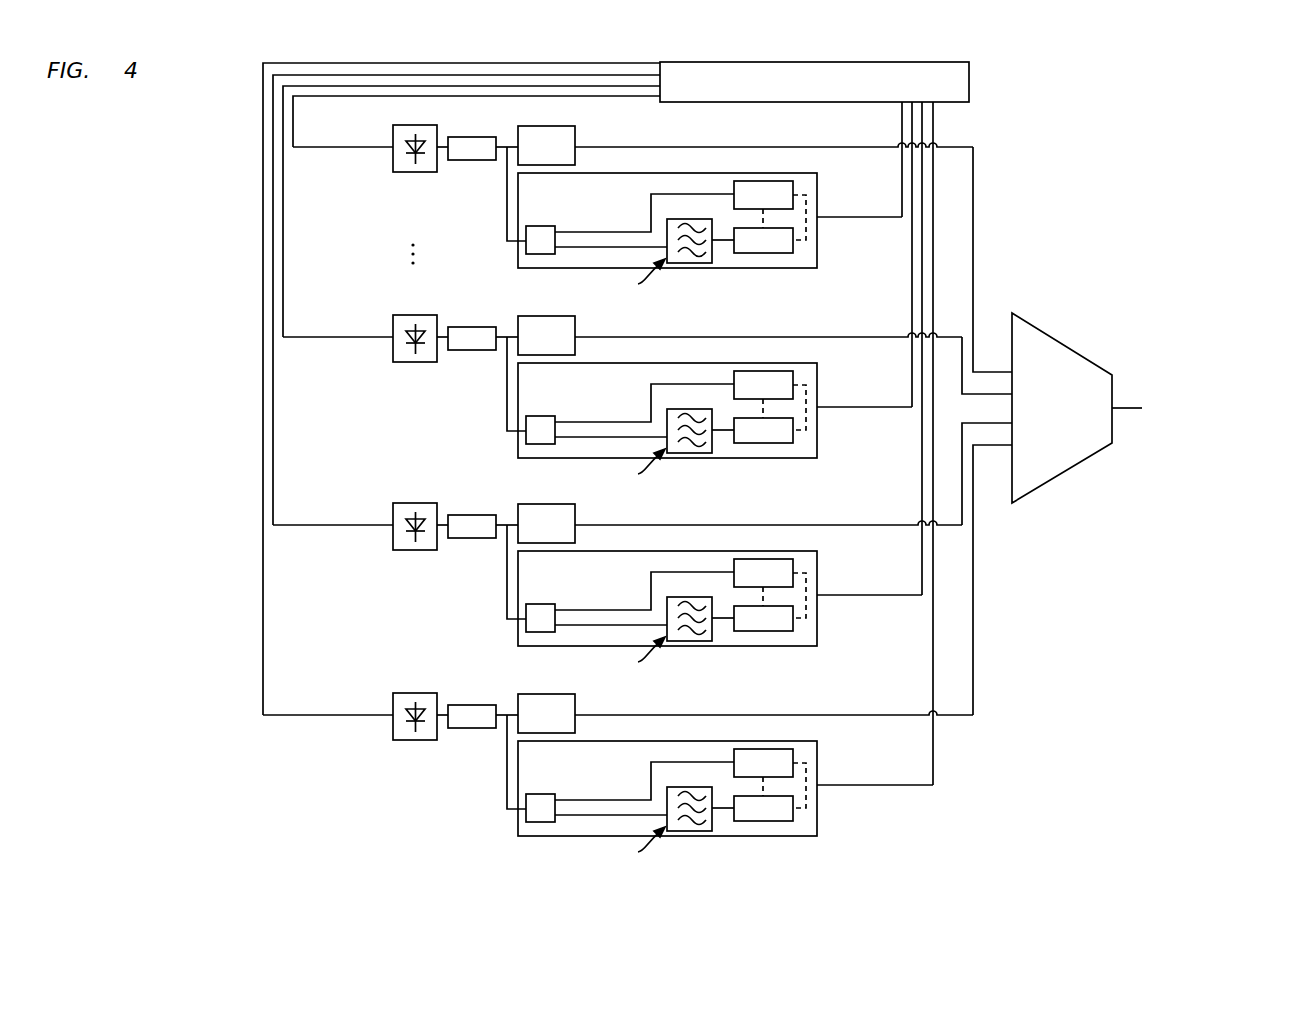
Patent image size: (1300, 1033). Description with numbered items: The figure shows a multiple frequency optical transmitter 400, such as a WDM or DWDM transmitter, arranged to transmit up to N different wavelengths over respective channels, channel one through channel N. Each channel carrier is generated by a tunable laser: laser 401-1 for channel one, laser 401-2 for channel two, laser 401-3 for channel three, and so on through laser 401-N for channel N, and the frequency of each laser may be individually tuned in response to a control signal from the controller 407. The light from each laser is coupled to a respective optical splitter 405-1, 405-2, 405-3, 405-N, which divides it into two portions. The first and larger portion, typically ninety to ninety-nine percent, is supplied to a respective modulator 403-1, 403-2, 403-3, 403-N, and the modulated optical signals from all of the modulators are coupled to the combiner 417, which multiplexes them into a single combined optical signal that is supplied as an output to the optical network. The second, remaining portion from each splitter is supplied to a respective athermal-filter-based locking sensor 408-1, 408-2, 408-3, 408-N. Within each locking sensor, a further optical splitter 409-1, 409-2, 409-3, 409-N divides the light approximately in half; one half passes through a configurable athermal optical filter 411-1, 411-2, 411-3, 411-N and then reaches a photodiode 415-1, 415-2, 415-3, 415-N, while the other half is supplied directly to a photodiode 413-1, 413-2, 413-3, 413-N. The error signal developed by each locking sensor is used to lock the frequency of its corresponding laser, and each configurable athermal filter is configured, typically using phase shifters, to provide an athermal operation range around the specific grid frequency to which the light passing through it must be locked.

The multiple frequency optical transmitter 400 is at (1283, 92).
The controller 407 is at (969, 76).
The combiner 417 is at (1077, 352).
The tunable laser 401-N is at (393, 131).
The modulator 403-N is at (518, 130).
The optical splitter 405-N is at (472, 161).
The athermal-filter-based locking sensor 408-N is at (704, 235).
The optical splitter 409-N is at (539, 226).
The configurable athermal optical filter 411-N is at (683, 263).
The photodiode 413-N is at (793, 183).
The photodiode 415-N is at (766, 254).
The tunable laser 401-3 is at (377, 328).
The modulator 403-3 is at (509, 325).
The optical splitter 405-3 is at (469, 363).
The athermal-filter-based locking sensor 408-3 is at (704, 425).
The optical splitter 409-3 is at (564, 413).
The configurable athermal optical filter 411-3 is at (688, 457).
The photodiode 413-3 is at (807, 372).
The photodiode 415-3 is at (765, 456).
The tunable laser 401-2 is at (377, 516).
The modulator 403-2 is at (509, 513).
The optical splitter 405-2 is at (469, 551).
The athermal-filter-based locking sensor 408-2 is at (704, 613).
The optical splitter 409-2 is at (564, 601).
The configurable athermal optical filter 411-2 is at (688, 645).
The photodiode 413-2 is at (807, 560).
The photodiode 415-2 is at (765, 644).
The tunable laser 401-1 is at (377, 706).
The modulator 403-1 is at (509, 703).
The optical splitter 405-1 is at (469, 741).
The athermal-filter-based locking sensor 408-1 is at (704, 803).
The optical splitter 409-1 is at (564, 791).
The configurable athermal optical filter 411-1 is at (688, 835).
The photodiode 413-1 is at (807, 750).
The photodiode 415-1 is at (765, 834).